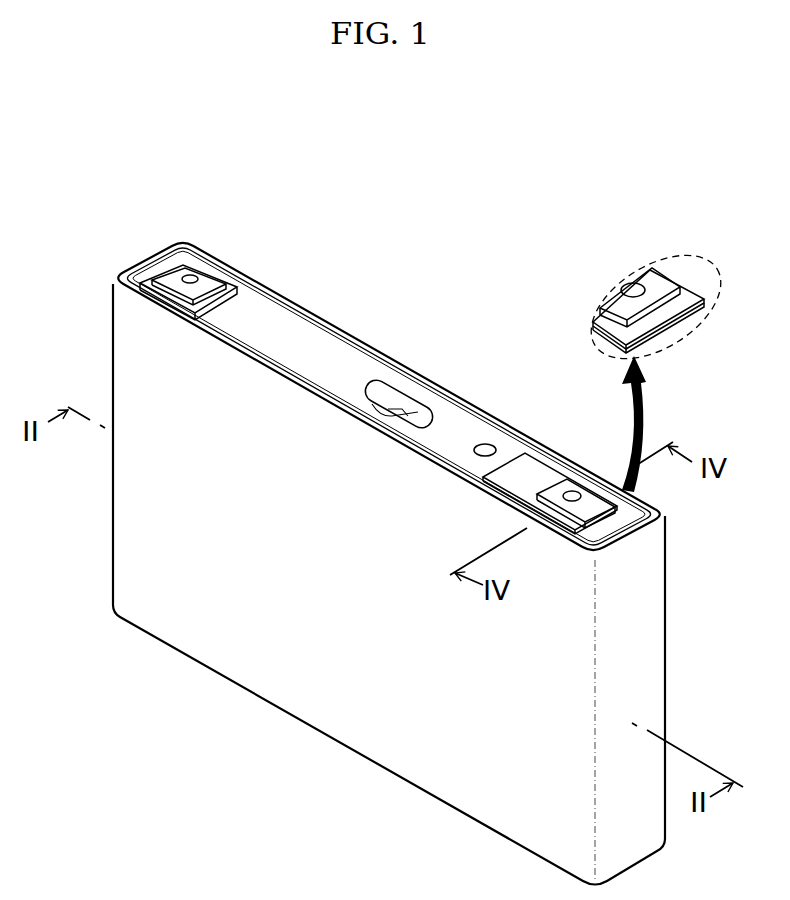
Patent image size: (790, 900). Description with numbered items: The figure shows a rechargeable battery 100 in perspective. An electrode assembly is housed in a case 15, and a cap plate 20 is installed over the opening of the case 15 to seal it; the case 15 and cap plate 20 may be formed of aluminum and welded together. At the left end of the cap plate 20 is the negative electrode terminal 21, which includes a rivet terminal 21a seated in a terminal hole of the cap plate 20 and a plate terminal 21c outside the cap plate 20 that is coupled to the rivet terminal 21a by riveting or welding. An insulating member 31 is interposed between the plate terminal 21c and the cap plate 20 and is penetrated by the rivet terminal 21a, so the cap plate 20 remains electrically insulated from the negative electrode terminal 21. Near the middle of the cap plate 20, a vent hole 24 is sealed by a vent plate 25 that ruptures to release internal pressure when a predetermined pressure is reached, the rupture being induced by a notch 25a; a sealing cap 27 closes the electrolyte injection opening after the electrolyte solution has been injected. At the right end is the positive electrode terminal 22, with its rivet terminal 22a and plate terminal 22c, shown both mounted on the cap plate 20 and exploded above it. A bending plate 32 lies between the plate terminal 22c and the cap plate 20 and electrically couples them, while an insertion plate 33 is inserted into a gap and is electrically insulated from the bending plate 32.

The rechargeable battery 100 is at (434, 181).
The case 15 is at (325, 692).
The cap plate 20 is at (305, 345).
The negative electrode terminal 21 is at (195, 264).
The rivet terminal 21a is at (186, 274).
The plate terminal 21c is at (213, 283).
The positive electrode terminal 22 is at (575, 478).
The rivet terminal 22a is at (520, 486).
The plate terminal 22c is at (572, 510).
The vent hole 24 is at (386, 392).
The vent plate 25 is at (403, 402).
The notch 25a is at (411, 416).
The sealing cap 27 is at (485, 450).
The insulating member 31 is at (236, 290).
The bending plate 32 is at (572, 508).
The insertion plate 33 is at (658, 328).